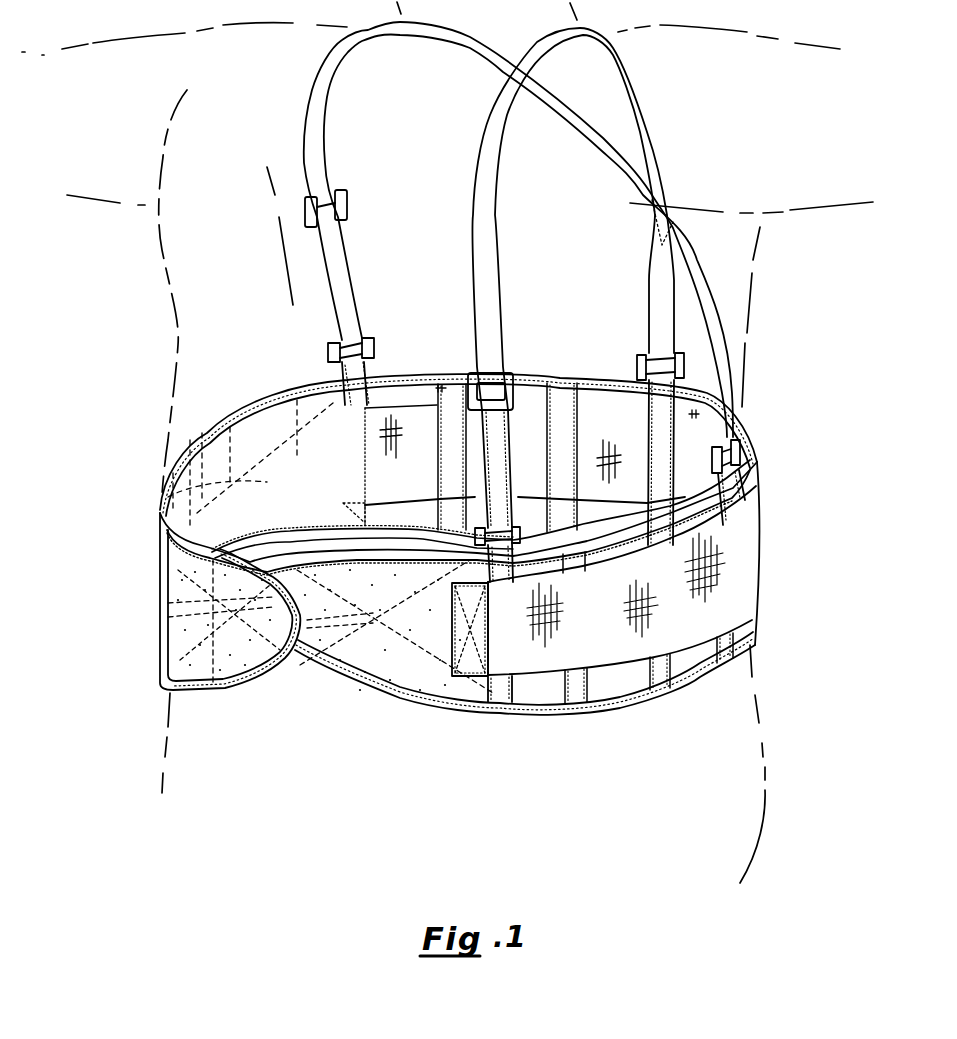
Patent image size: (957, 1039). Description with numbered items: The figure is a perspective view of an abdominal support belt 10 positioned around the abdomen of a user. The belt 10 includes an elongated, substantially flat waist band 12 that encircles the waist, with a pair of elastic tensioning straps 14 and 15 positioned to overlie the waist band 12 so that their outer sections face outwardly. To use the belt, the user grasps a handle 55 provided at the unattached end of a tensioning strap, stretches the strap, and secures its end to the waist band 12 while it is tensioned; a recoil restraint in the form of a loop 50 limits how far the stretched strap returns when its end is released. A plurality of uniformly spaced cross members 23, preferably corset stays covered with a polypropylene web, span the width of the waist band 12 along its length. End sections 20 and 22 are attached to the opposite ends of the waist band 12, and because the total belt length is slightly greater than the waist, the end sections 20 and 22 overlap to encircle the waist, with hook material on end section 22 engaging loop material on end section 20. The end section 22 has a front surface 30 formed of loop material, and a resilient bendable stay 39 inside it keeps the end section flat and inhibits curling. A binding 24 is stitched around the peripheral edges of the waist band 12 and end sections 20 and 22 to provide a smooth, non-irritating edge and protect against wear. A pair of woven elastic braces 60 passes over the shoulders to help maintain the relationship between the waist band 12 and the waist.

The abdominal support belt 10 is at (388, 787).
The waist band 12 is at (697, 660).
The tensioning strap 14 is at (758, 567).
The tensioning strap 15 is at (387, 418).
The end section 20 is at (443, 730).
The end section 22 is at (222, 745).
The cross members 23 is at (557, 402).
The binding 24 is at (277, 397).
The front surface 30 is at (172, 546).
The stay 39 is at (165, 603).
The loop 50 is at (497, 697).
The handle 55 is at (453, 632).
The braces 60 is at (340, 245).